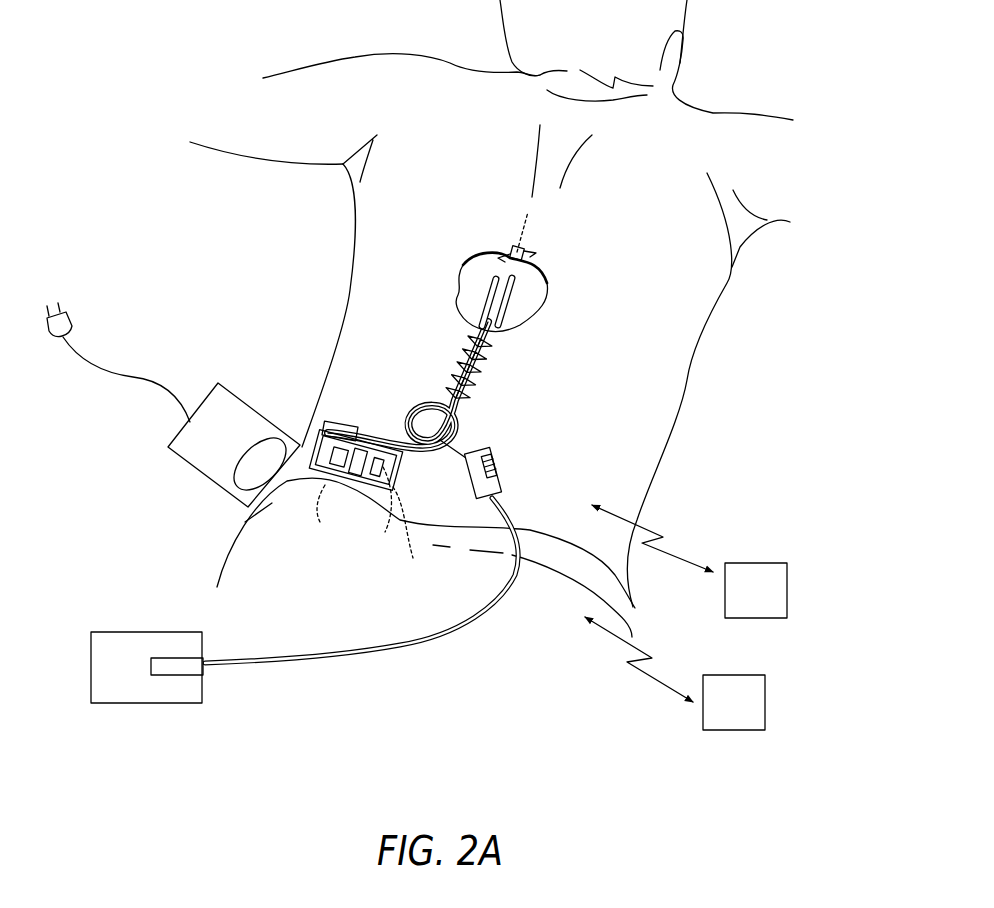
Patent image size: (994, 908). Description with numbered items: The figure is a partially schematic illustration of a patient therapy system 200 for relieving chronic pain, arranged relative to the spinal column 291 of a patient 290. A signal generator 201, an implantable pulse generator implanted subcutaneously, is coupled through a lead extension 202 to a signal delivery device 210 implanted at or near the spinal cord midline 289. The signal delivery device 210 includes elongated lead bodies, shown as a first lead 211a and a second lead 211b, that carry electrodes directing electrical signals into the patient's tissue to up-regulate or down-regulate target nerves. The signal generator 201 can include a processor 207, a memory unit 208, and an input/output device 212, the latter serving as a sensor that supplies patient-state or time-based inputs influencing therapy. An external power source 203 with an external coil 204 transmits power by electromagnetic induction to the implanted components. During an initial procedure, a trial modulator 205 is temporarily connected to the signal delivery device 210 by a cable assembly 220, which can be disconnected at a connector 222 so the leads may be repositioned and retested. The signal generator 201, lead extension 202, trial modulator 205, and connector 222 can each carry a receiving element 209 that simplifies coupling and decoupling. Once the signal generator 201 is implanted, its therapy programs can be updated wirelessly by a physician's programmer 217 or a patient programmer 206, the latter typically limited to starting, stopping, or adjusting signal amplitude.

The patient therapy system 200 is at (182, 303).
The signal generator 201 is at (395, 455).
The lead extension 202 is at (420, 405).
The external power source 203 is at (233, 393).
The external coil 204 is at (222, 485).
The trial modulator 205 is at (135, 632).
The wireless patient programmer 206 is at (762, 563).
The processor 207 is at (319, 516).
The memory unit 208 is at (377, 512).
The receiving element 209 is at (478, 450).
The signal delivery device 210 is at (465, 263).
The first lead 211a is at (485, 307).
The second lead 211b is at (512, 294).
The input/output device 212 is at (414, 537).
The wireless physician's programmer 217 is at (737, 675).
The cable assembly 220 is at (433, 652).
The connector 222 is at (492, 470).
The spinal cord midline 289 is at (530, 222).
The patient 290 is at (672, 407).
The spinal column 291 is at (505, 373).